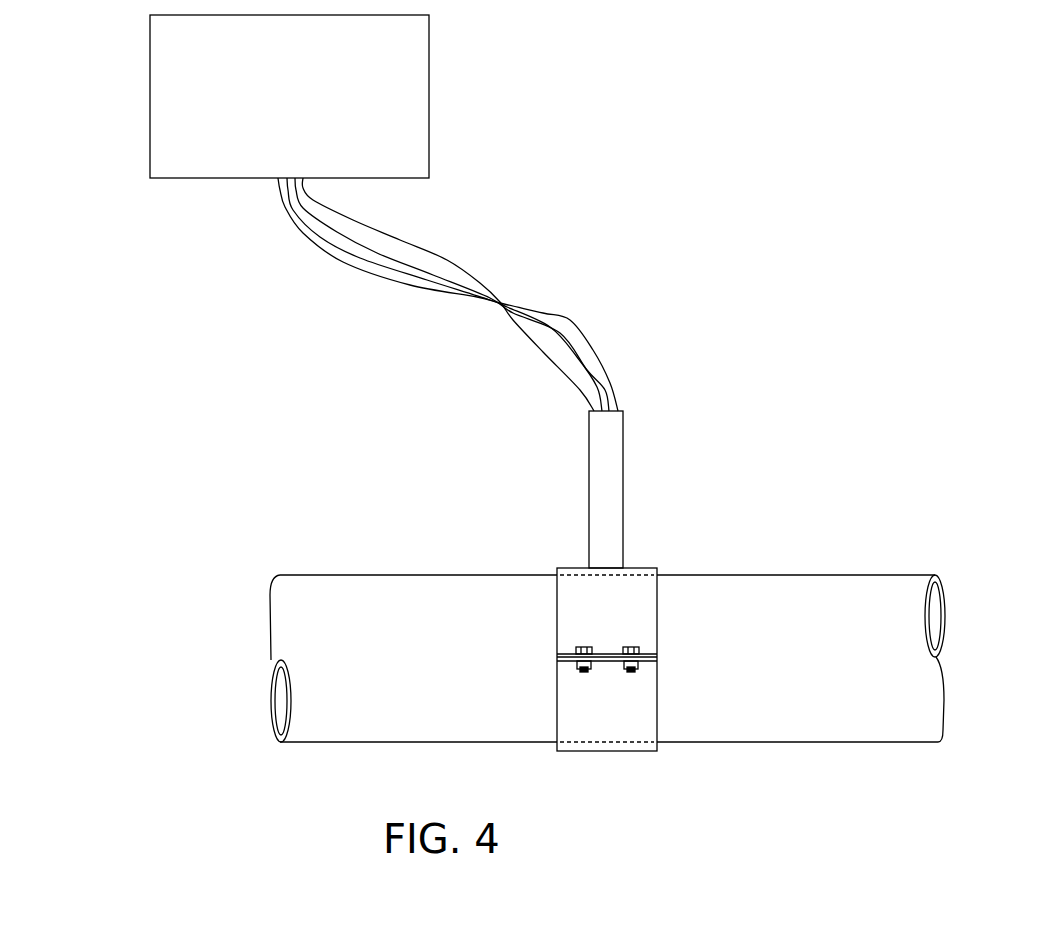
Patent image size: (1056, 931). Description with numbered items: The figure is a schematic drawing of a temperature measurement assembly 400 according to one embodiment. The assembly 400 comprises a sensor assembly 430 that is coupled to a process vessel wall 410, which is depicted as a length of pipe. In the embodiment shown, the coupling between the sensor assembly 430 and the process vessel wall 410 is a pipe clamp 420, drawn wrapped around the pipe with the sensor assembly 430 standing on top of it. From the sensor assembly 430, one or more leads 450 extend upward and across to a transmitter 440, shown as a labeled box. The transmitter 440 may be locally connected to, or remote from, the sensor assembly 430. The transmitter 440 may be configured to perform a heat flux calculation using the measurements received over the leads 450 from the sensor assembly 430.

The temperature measurement assembly 400 is at (926, 122).
The process vessel wall 410 is at (742, 608).
The pipe clamp 420 is at (632, 588).
The sensor assembly 430 is at (623, 445).
The transmitter 440 is at (429, 130).
The leads 450 is at (435, 255).